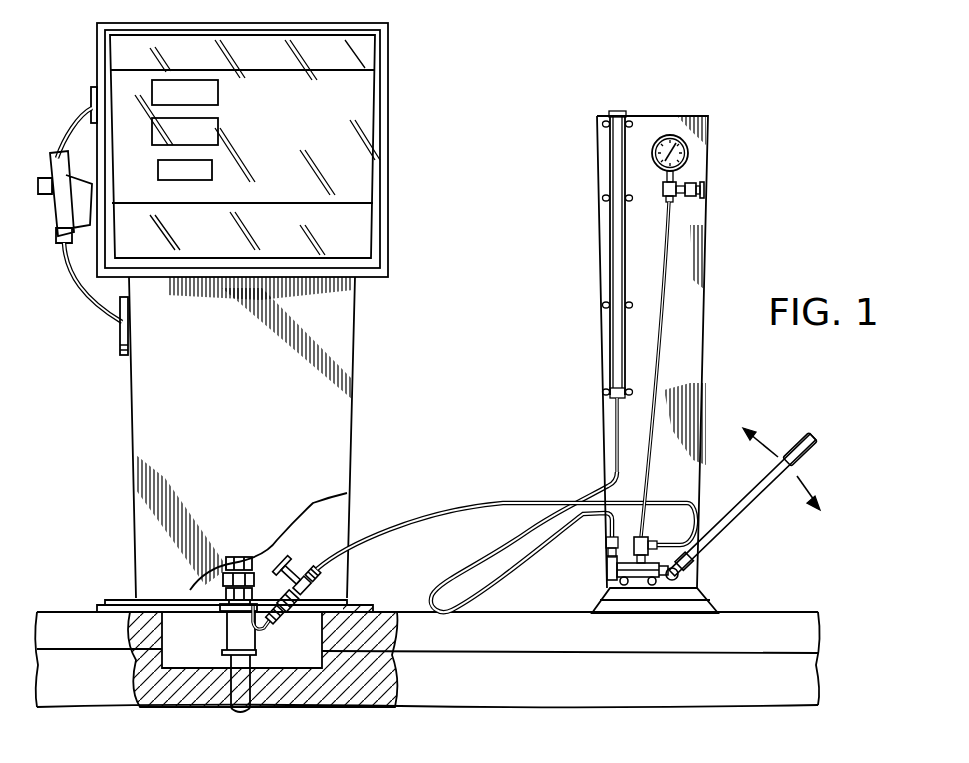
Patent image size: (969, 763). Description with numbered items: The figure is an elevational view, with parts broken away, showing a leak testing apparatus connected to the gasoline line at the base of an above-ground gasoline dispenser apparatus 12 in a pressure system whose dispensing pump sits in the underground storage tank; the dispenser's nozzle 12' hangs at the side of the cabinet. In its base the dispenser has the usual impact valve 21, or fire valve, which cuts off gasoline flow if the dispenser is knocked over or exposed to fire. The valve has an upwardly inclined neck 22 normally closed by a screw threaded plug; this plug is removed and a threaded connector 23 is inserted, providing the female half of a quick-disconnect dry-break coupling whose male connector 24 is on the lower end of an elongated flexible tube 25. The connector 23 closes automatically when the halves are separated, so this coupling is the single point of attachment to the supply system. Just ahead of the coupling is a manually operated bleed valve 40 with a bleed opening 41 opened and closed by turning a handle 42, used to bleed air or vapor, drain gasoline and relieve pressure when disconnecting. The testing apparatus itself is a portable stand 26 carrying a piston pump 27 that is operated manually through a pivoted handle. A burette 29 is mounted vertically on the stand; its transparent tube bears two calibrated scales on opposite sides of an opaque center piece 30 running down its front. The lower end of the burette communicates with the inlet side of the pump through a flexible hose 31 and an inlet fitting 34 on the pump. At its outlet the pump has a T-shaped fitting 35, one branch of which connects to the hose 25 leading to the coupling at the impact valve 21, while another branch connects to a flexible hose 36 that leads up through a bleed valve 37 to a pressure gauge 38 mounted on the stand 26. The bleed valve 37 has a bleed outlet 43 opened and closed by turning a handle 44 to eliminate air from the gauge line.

The gasoline dispenser apparatus 12 is at (253, 317).
The dispensing nozzle 12' is at (82, 221).
The impact valve 21 is at (232, 632).
The neck 22 is at (262, 624).
The threaded connector 23 is at (277, 612).
The male connector 24 is at (297, 598).
The flexible tube 25 is at (421, 517).
The portable stand 26 is at (706, 389).
The piston pump 27 is at (633, 572).
The burette 29 is at (611, 240).
The opaque center piece 30 is at (613, 298).
The flexible hose 31 is at (614, 433).
The inlet fitting 34 is at (608, 566).
The T-shaped fitting 35 is at (648, 545).
The flexible hose 36 is at (650, 462).
The bleed valve 37 is at (665, 195).
The pressure gauge 38 is at (688, 153).
The bleed valve 40 is at (296, 562).
The bleed opening 41 is at (306, 572).
The handle 42 is at (277, 560).
The bleed outlet 43 is at (686, 196).
The handle 44 is at (705, 188).